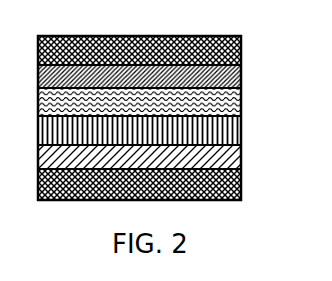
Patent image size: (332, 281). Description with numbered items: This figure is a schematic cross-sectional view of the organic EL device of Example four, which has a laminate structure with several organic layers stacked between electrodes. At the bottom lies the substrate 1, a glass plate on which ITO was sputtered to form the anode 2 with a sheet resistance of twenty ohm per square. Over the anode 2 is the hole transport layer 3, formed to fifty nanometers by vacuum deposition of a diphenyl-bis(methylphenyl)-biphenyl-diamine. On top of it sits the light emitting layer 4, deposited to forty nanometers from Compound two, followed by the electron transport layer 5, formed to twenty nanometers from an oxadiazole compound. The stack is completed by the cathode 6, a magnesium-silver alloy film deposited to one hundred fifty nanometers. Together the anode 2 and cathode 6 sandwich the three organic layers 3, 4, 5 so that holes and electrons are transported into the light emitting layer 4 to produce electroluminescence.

The substrate 1 is at (242, 185).
The anode 2 is at (242, 158).
The hole transport layer 3 is at (242, 132).
The light emitting layer 4 is at (242, 102).
The electron transport layer 5 is at (242, 77).
The cathode 6 is at (242, 48).